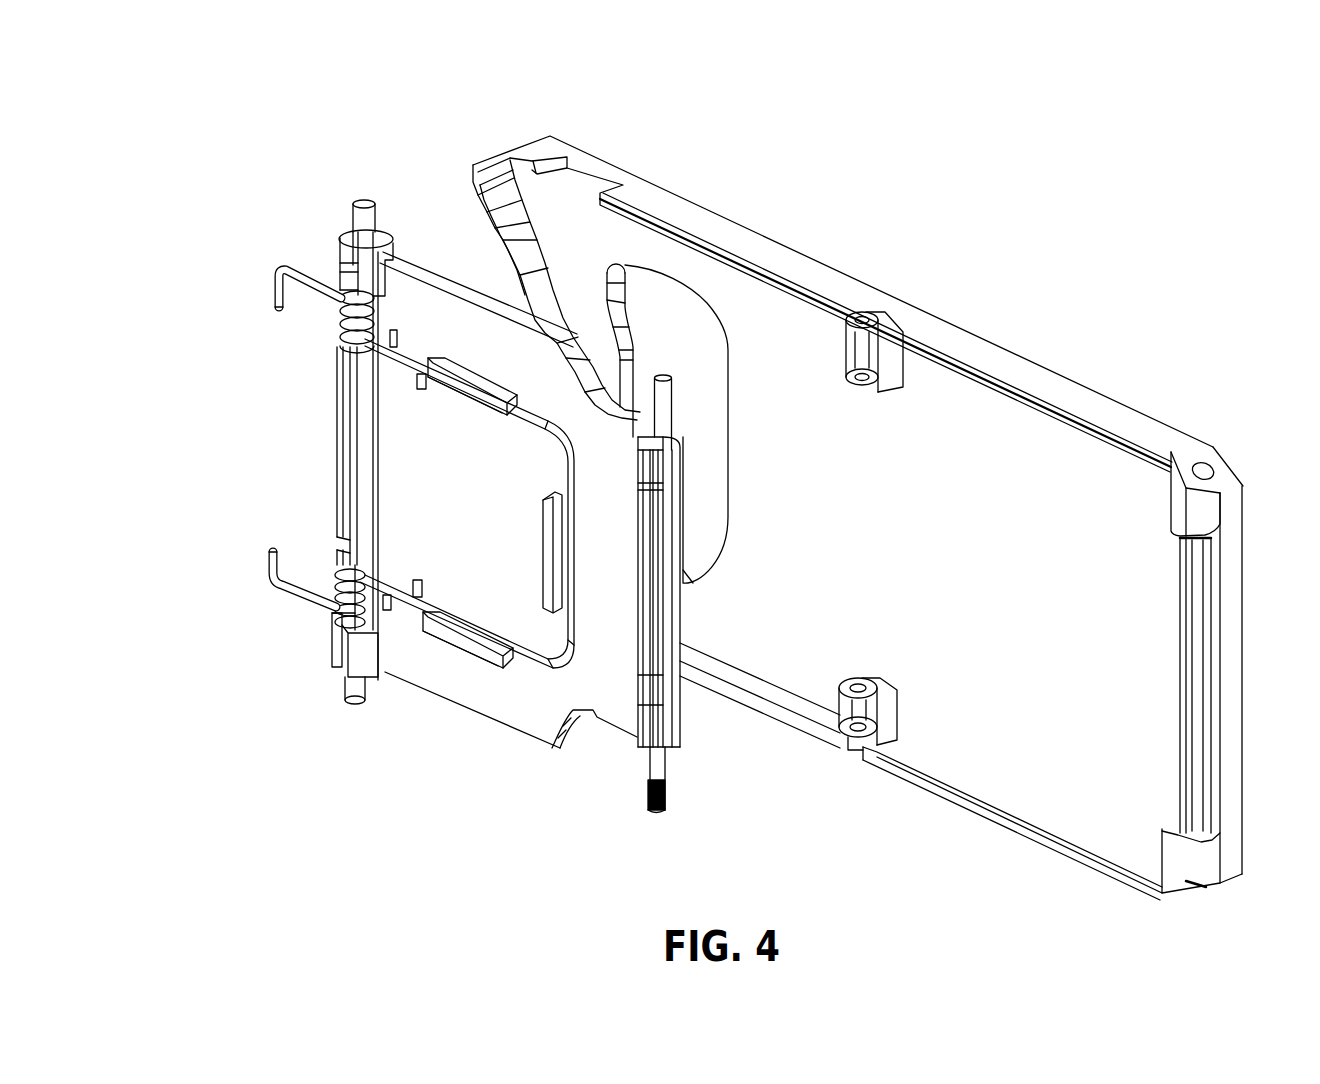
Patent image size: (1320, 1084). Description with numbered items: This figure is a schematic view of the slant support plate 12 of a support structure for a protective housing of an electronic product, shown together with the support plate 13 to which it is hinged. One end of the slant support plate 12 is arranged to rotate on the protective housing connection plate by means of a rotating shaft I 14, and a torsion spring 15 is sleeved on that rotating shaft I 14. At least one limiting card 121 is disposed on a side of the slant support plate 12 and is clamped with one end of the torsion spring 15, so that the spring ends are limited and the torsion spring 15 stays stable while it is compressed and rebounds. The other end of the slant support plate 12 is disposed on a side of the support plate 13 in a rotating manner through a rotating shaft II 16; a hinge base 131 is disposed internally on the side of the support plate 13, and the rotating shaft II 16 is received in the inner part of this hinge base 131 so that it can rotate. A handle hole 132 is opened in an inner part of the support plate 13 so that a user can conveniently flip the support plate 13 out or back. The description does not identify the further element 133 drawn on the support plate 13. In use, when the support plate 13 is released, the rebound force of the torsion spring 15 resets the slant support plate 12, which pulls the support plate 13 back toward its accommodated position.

The slant support plate 12 is at (520, 693).
The limiting card 121 is at (453, 405).
The support plate 13 is at (977, 750).
The hinge base 131 is at (852, 707).
The handle hole 132 is at (490, 240).
The hook arm slot 133 is at (650, 307).
The rotating shaft I 14 is at (364, 217).
The torsion spring 15 is at (346, 306).
The rotating shaft II 16 is at (665, 380).